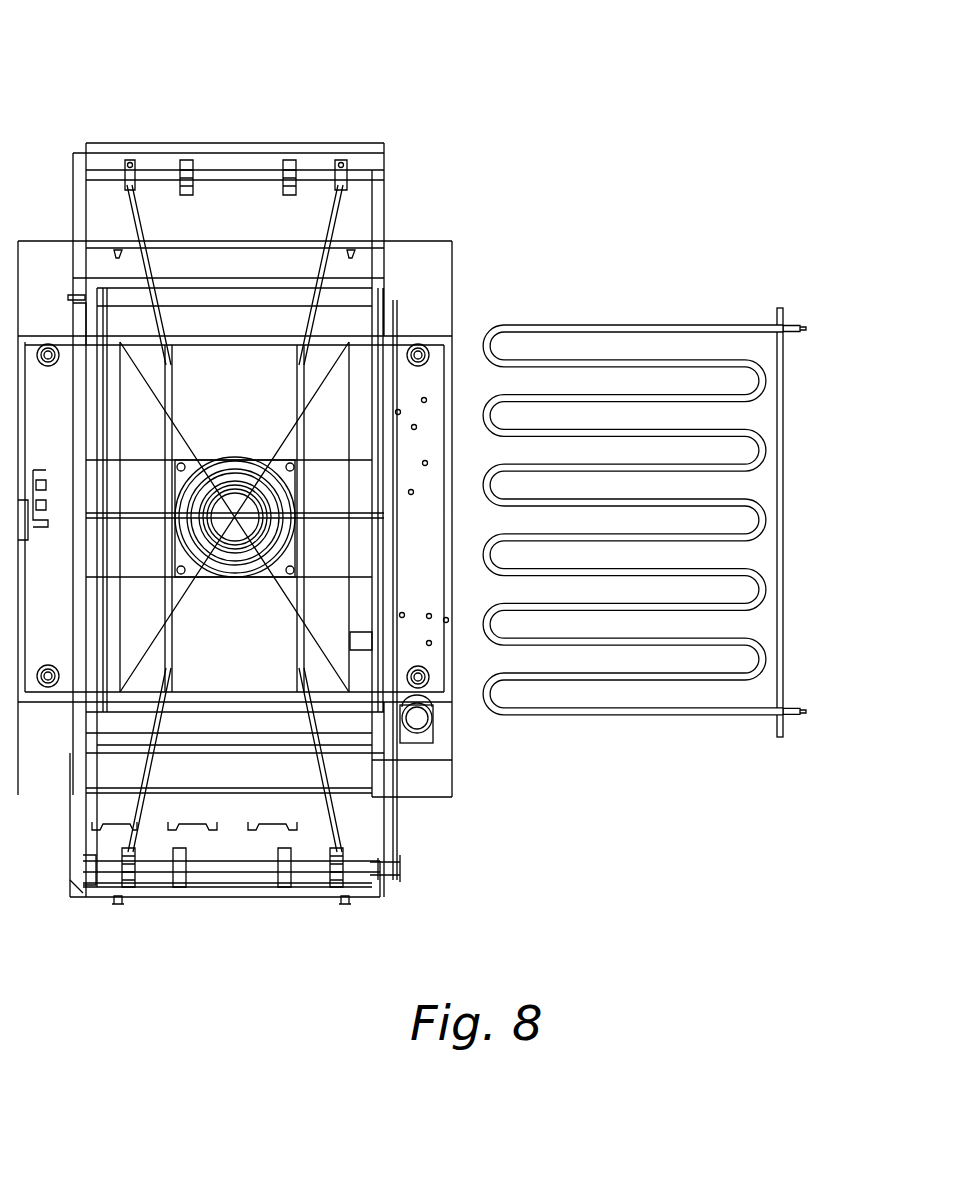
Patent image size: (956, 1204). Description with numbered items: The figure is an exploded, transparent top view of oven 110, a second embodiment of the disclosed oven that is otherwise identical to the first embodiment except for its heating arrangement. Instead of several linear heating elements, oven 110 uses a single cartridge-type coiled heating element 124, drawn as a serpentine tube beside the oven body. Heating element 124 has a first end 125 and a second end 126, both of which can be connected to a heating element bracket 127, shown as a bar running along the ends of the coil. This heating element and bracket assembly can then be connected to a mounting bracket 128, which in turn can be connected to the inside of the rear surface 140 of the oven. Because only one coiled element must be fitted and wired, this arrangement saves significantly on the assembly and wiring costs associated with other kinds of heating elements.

The oven 110 is at (108, 73).
The heating element 124 is at (641, 327).
The first end 125 is at (806, 327).
The second end 126 is at (797, 716).
The heating element bracket 127 is at (783, 522).
The mounting bracket 128 is at (398, 598).
The rear surface 140 is at (452, 772).